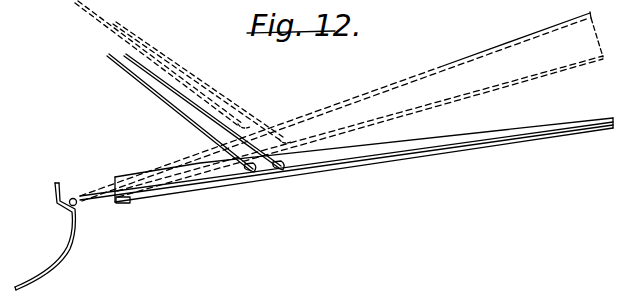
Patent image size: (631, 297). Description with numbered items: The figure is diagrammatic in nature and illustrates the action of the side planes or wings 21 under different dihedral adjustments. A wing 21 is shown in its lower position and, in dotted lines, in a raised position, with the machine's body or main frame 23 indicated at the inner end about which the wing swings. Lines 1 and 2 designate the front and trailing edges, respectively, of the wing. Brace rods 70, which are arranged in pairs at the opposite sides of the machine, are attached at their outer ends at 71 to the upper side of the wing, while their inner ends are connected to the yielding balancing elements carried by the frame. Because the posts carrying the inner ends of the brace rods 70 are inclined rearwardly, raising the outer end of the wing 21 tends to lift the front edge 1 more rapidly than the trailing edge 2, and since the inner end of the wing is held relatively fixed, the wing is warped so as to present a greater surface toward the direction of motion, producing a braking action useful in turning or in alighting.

The front edge 1 is at (535, 29).
The trailing edge 2 is at (573, 65).
The main side plane or wing 21 is at (491, 133).
The body or main frame 23 is at (68, 245).
The brace rod 70 is at (145, 70).
The attachment point of brace rod 71 is at (253, 168).